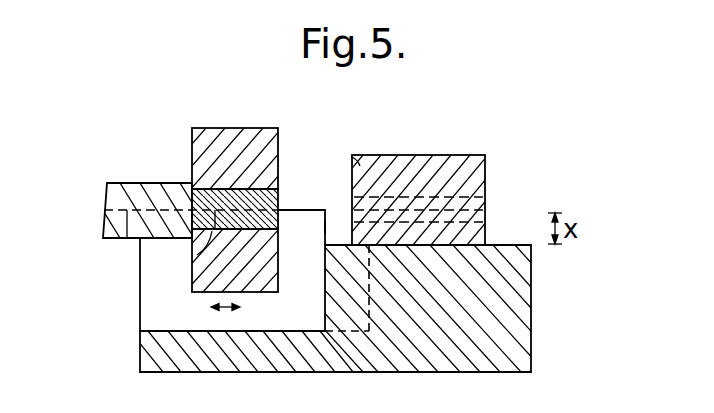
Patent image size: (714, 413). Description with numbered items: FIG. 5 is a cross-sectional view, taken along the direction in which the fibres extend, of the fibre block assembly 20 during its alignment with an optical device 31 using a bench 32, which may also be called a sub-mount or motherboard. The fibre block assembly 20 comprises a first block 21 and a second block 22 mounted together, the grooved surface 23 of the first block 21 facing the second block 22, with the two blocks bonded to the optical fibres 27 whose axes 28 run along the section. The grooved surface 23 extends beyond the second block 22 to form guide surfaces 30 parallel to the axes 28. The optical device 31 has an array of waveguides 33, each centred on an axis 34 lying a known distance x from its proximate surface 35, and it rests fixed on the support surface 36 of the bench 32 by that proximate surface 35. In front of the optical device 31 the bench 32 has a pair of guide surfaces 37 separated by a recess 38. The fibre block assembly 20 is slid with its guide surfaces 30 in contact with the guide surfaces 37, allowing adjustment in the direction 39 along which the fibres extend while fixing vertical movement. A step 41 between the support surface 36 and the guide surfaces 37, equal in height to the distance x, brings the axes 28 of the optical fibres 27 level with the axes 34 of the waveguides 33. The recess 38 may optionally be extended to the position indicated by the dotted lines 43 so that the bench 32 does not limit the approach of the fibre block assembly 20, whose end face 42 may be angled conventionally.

The fibre block assembly 20 is at (243, 185).
The first block 21 is at (253, 147).
The end face of the fibre block assembly 42 is at (278, 158).
The second block 22 is at (272, 275).
The optical fibres 27 is at (191, 188).
The axes of the optical fibres 28 is at (124, 239).
The surface of the first block 23 is at (131, 289).
The guide surfaces 30 is at (197, 255).
The guide surfaces of the bench 37 is at (312, 210).
The step 41 is at (325, 227).
The direction along which the optical fibres extend 39 is at (239, 317).
The recess 38 is at (289, 332).
The bench 32 is at (503, 327).
The support surface 36 is at (433, 246).
The optical device 31 is at (456, 165).
The waveguides 33 is at (382, 197).
The axes of the waveguides 34 is at (398, 210).
The proximate surface 35 is at (462, 244).
The dotted lines 43 is at (356, 157).